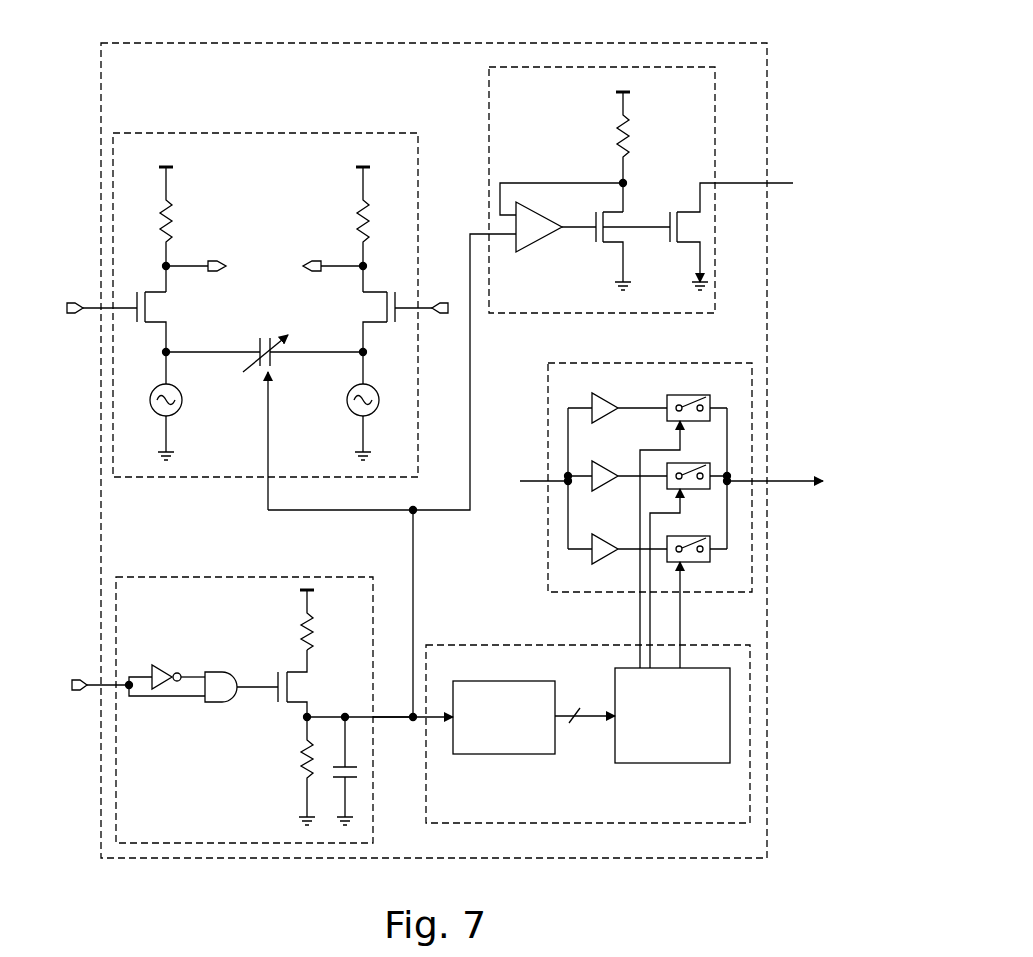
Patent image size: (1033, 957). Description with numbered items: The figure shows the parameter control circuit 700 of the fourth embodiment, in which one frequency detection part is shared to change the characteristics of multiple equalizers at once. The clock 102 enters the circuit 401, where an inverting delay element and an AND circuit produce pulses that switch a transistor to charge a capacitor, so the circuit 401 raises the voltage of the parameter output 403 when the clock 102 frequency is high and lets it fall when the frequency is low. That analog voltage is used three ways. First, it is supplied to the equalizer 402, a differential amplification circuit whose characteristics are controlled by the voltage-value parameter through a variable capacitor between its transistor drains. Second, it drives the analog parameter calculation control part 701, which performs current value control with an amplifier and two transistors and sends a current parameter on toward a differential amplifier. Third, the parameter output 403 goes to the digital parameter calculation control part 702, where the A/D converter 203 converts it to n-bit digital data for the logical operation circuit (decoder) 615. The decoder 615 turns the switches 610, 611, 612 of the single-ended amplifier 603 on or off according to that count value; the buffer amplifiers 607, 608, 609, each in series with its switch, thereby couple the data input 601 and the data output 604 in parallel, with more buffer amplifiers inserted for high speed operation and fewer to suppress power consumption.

The parameter control circuit 700 is at (398, 43).
The analog parameter calculation control part 701 is at (714, 98).
The equalizer 402 is at (308, 133).
The circuit 401 is at (183, 577).
The parameter output 403 is at (385, 720).
The clock 102 is at (72, 693).
The digital parameter calculation control part 702 is at (487, 646).
The A/D converter 203 is at (497, 755).
The logical operation circuit (decoder) 615 is at (680, 764).
The single-ended amplifier 603 is at (712, 362).
The data input 601 is at (519, 485).
The data output 604 is at (800, 490).
The buffer amplifier 607 is at (612, 409).
The buffer amplifier 608 is at (596, 460).
The buffer amplifier 609 is at (596, 535).
The switch 610 is at (684, 396).
The switch 611 is at (689, 457).
The switch 612 is at (689, 532).